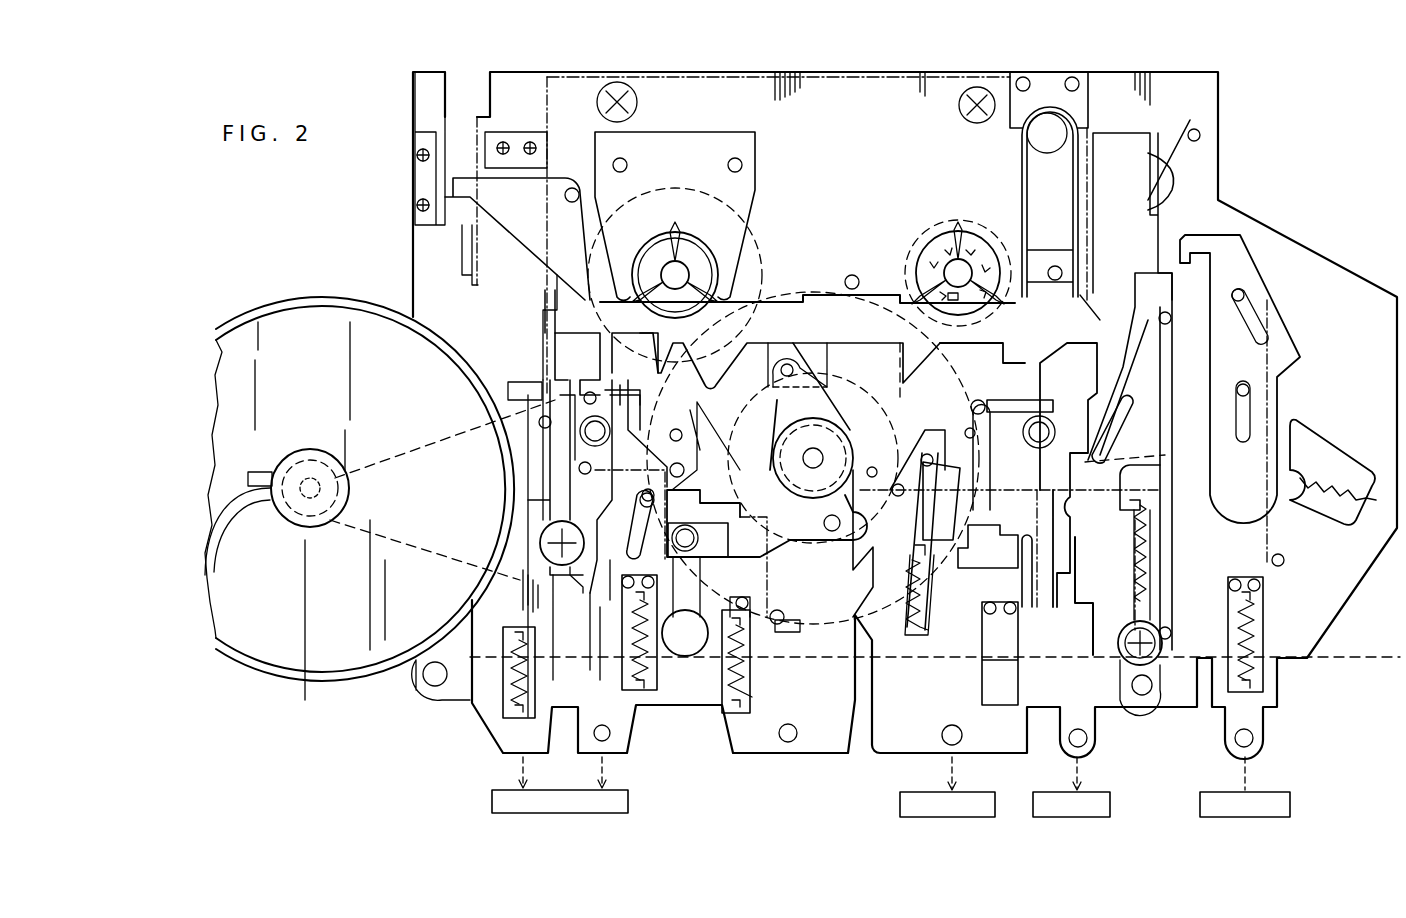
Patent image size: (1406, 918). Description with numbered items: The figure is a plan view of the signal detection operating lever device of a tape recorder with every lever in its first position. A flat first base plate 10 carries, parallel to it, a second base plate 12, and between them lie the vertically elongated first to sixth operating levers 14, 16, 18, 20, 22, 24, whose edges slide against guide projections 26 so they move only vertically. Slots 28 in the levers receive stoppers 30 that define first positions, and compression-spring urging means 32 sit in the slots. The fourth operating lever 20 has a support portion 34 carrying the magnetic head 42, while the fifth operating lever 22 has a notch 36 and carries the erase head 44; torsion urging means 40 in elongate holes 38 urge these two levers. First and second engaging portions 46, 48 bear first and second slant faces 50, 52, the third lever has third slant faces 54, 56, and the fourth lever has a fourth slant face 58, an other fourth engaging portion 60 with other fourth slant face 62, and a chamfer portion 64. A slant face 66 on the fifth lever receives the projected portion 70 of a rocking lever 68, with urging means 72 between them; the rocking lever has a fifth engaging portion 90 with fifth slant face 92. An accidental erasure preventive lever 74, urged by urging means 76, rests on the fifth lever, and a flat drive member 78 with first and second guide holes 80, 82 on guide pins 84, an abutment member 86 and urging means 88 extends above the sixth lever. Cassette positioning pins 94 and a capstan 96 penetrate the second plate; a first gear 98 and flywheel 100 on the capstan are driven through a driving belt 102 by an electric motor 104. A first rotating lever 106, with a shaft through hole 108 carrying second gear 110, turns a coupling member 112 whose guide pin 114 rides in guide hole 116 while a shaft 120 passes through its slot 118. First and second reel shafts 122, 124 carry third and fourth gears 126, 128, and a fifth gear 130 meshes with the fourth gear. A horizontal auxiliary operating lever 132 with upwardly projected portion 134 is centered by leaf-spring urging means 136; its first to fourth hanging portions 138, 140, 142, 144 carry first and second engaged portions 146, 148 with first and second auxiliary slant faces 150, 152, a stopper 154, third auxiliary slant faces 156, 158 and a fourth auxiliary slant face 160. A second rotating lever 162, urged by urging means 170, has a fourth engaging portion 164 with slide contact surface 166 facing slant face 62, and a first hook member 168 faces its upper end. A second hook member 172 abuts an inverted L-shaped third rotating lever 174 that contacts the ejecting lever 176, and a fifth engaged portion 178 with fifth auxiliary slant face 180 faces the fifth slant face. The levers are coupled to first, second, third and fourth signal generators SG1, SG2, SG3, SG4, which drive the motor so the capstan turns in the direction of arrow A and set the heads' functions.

The first base plate 10 is at (1345, 612).
The second base plate 12 is at (905, 75).
The first operating lever 14 is at (540, 748).
The second operating lever 16 is at (625, 748).
The third operating lever 18 is at (838, 745).
The fourth operating lever 20 is at (1005, 745).
The fifth operating lever 22 is at (1095, 748).
The sixth operating lever 24 is at (1258, 748).
The guide projections 26 is at (525, 385).
The slots 28 is at (510, 715).
The stoppers 30 is at (630, 585).
The urging means 32 is at (503, 670).
The support portion 34 is at (995, 572).
The notch 36 is at (1140, 470).
The elongate holes 38 is at (960, 490).
The urging means 40 is at (935, 590).
The magnetic head 42 is at (975, 655).
The erase head 44 is at (1035, 655).
The first engaging portion 46 is at (510, 412).
The second engaging portion 48 is at (510, 452).
The first slant face 50 is at (580, 418).
The second slant face 52 is at (636, 389).
The third slant face 54 is at (682, 440).
The third slant face 56 is at (720, 432).
The fourth slant face 58 is at (925, 445).
The fourth engaging portion 60 is at (925, 565).
The fourth slant face 62 is at (978, 538).
The chamfer portion 64 is at (1037, 572).
The slant face 66 is at (1118, 410).
The rocking lever 68 is at (1100, 360).
The projected portion 70 is at (1082, 512).
The urging means 72 is at (1140, 440).
The accidental erasure preventive lever 74 is at (1160, 200).
The urging means 76 is at (1195, 143).
The flat drive member 78 is at (1288, 335).
The first guide hole 80 is at (1240, 438).
The second guide hole 82 is at (1255, 336).
The guide pin 84 is at (1240, 288).
The abutment member 86 is at (1198, 248).
The urging means 88 is at (1318, 480).
The fifth engaging portion 90 is at (1030, 380).
The fifth slant face 92 is at (1065, 320).
The cassette positioning pins 94 is at (605, 440).
The capstan 96 is at (810, 448).
The first gear 98 is at (860, 488).
The flywheel 100 is at (895, 605).
The driving belt 102 is at (390, 428).
The electric motor 104 is at (308, 325).
The first rotating lever 106 is at (845, 380).
The hole 108 is at (748, 350).
The second gear 110 is at (770, 300).
The coupling member 112 is at (812, 535).
The guide pin 114 is at (530, 480).
The guide hole 116 is at (545, 548).
The slot 118 is at (718, 540).
The shaft 120 is at (705, 565).
The first reel shaft 122 is at (660, 255).
The second reel shaft 124 is at (928, 253).
The third gear 126 is at (758, 250).
The fourth gear 128 is at (990, 230).
The fifth gear 130 is at (890, 300).
The auxiliary operating lever 132 is at (555, 310).
The upwardly projected portion 134 is at (1052, 282).
The urging means 136 is at (1050, 172).
The first hanging portion 138 is at (540, 340).
The second hanging portion 140 is at (620, 345).
The third hanging portion 142 is at (778, 372).
The fourth hanging portion 144 is at (850, 350).
The first engaged portion 146 is at (547, 365).
The second engaged portion 148 is at (600, 355).
The first auxiliary slant face 150 is at (590, 378).
The second auxiliary slant face 152 is at (628, 390).
The stopper 154 is at (688, 345).
The third auxiliary slant face 156 is at (700, 412).
The third auxiliary slant face 158 is at (725, 383).
The fourth auxiliary slant face 160 is at (930, 355).
The second rotating lever 162 is at (1030, 438).
The fourth engaging portion 164 is at (1000, 503).
The slide contact surface 166 is at (868, 520).
The first hook member 168 is at (990, 340).
The urging means 170 is at (905, 400).
The second hook member 172 is at (560, 290).
The third rotating lever 174 is at (515, 182).
The ejecting lever 176 is at (472, 255).
The fifth engaged portion 178 is at (1102, 310).
The fifth auxiliary slant face 180 is at (1092, 320).
The arrow A is at (762, 456).
The first signal generator SG1 is at (628, 803).
The second signal generator SG2 is at (905, 802).
The third signal generator SG3 is at (1108, 803).
The fourth signal generator SG4 is at (1290, 803).